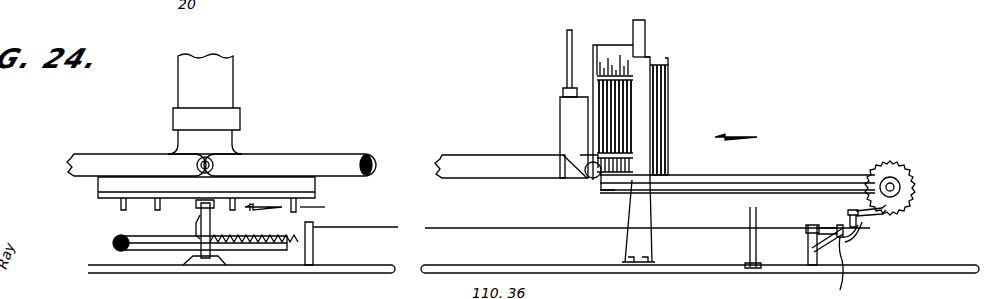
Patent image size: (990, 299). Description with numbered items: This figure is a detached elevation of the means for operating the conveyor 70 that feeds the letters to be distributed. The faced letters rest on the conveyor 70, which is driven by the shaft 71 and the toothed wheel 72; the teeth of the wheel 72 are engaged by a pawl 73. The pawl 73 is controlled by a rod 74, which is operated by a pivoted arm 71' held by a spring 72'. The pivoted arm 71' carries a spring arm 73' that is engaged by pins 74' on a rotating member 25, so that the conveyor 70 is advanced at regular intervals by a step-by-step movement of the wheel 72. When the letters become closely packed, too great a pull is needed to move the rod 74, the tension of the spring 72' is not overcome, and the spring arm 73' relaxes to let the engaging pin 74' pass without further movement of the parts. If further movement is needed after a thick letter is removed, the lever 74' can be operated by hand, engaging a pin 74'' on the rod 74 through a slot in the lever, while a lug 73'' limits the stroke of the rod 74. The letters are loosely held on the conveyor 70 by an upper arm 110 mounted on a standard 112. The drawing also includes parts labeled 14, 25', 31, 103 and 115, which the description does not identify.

The tube bar 14 is at (97, 148).
The rotating member 25 is at (178, 194).
The plate support 25' is at (229, 183).
The block 31 is at (576, 125).
The conveyor 70 is at (749, 180).
The shaft 71 is at (922, 187).
The pivoted arm 71' is at (184, 234).
The wheel 72 is at (910, 190).
The spring 72' is at (213, 260).
The pawl 73 is at (851, 223).
The spring arm 73' is at (841, 268).
The lug 73'' is at (813, 245).
The rod 74 is at (702, 224).
The pins / lever 74' is at (530, 233).
The pin 74'' is at (774, 217).
The rod 103 is at (566, 48).
The upper arm 110 is at (612, 45).
The standard 112 is at (655, 38).
The tube bank 115 is at (632, 80).